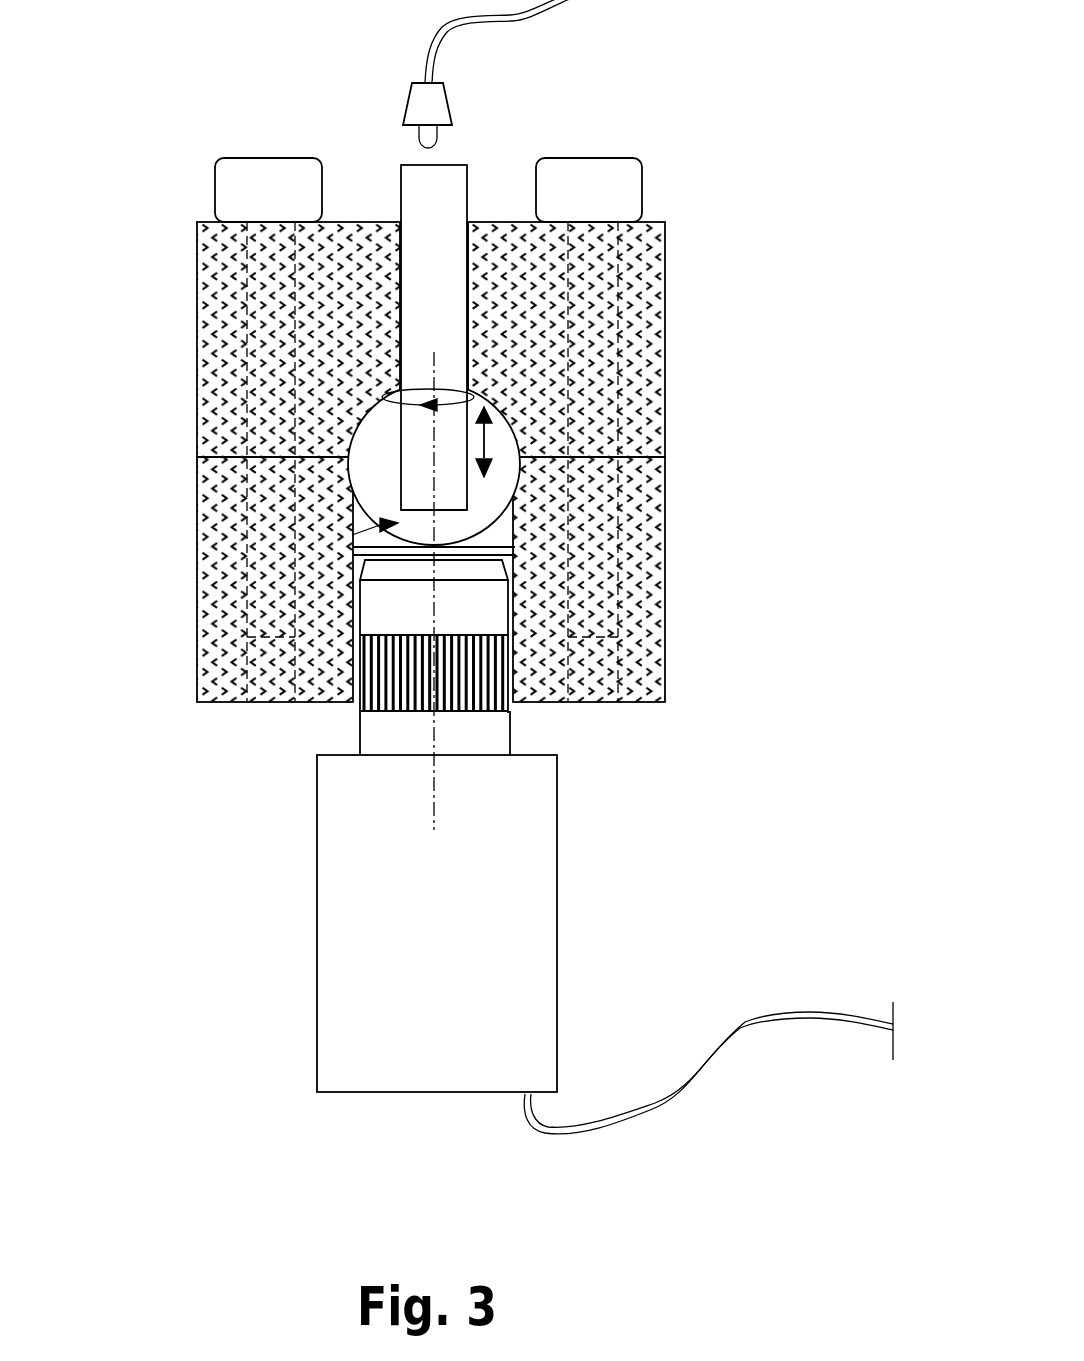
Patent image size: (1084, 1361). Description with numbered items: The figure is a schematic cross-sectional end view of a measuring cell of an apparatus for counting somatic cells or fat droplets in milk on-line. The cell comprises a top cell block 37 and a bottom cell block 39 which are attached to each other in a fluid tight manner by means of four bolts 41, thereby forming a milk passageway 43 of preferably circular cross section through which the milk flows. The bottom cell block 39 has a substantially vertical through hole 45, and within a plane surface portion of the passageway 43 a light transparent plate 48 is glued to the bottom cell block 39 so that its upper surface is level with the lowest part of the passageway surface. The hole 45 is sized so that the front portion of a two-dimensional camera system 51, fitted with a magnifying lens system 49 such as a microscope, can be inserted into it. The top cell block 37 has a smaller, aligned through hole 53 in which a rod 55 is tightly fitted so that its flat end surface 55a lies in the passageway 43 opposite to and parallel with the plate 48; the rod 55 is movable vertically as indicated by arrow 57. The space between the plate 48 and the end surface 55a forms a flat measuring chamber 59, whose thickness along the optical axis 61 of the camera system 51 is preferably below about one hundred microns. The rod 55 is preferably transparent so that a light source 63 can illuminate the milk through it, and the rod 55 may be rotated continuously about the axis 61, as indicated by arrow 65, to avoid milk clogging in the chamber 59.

The top cell block 37 is at (668, 310).
The bottom cell block 39 is at (668, 560).
The bolts 41 is at (215, 188).
The milk passageway 43 is at (367, 437).
The through hole 45 is at (513, 597).
The light transparent plate 48 is at (513, 541).
The lens system 49 is at (512, 735).
The camera system 51 is at (557, 862).
The through hole 53 is at (470, 278).
The rod 55 is at (398, 190).
The flat end surface 55a is at (467, 518).
The arrow 57 is at (490, 437).
The flat measuring chamber 59 is at (352, 535).
The optical axis 61 is at (435, 790).
The light source 63 is at (410, 88).
The arrow 65 is at (383, 392).